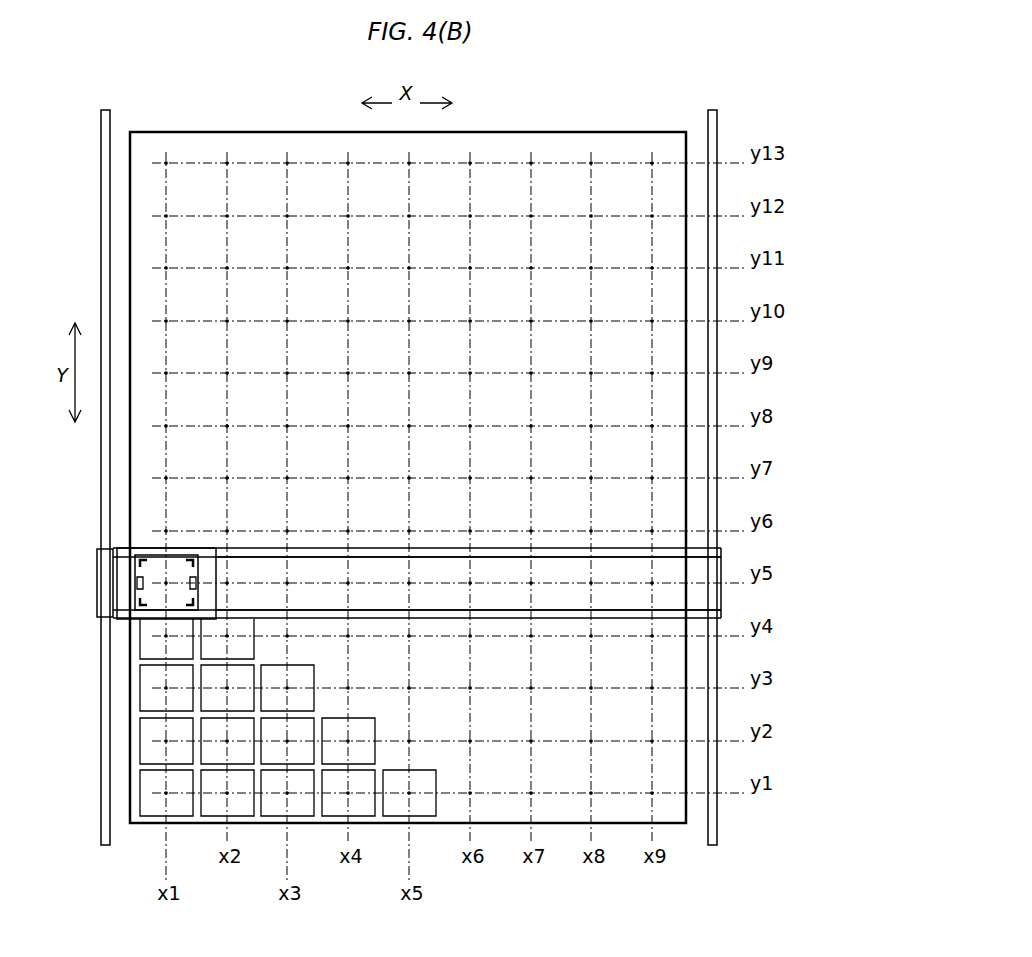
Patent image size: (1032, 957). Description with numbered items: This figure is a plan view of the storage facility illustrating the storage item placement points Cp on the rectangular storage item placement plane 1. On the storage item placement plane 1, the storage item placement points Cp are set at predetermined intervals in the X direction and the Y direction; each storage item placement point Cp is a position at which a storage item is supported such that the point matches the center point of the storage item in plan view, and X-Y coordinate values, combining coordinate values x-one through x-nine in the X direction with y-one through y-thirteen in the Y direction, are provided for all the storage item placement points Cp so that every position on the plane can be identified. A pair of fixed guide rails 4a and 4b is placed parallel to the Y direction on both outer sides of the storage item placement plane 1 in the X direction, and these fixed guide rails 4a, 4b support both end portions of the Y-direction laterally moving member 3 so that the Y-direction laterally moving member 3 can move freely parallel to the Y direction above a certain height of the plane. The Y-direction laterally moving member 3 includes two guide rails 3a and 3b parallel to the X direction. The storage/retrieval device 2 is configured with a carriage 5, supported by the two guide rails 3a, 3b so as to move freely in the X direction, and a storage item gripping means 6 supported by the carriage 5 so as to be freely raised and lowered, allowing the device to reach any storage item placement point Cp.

The storage item placement plane 1 is at (620, 132).
The storage/retrieval device 2 is at (148, 545).
The Y-direction laterally moving member 3 is at (417, 558).
The guide rail 3a is at (507, 619).
The guide rail 3b is at (503, 553).
The fixed guide rail 4a is at (101, 244).
The fixed guide rail 4b is at (718, 396).
The carriage 5 is at (128, 580).
The storage item gripping means 6 is at (188, 558).
The storage item placement point Cp is at (621, 777).